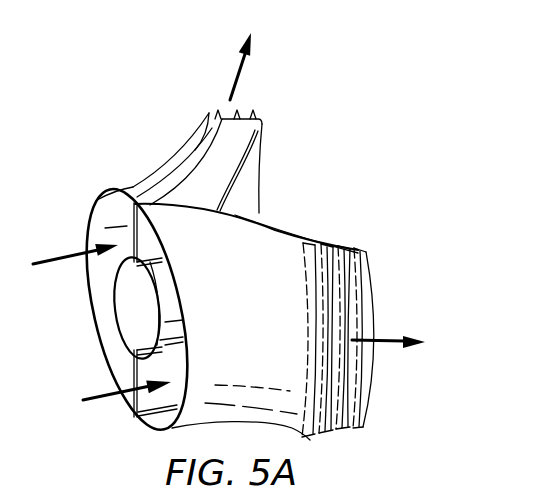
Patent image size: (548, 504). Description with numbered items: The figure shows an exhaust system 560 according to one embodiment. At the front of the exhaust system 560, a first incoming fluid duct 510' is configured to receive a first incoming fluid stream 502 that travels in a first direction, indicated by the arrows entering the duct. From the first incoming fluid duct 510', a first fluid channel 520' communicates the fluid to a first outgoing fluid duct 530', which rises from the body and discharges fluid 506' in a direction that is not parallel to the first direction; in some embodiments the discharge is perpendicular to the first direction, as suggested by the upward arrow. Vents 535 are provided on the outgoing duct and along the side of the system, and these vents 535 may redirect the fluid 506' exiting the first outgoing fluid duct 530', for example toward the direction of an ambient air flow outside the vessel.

The exhaust system 560 is at (124, 56).
The first incoming fluid stream 502 is at (60, 258).
The discharged fluid 506' is at (209, 66).
The first incoming fluid duct 510' is at (114, 309).
The first fluid channel 520' is at (179, 163).
The first outgoing fluid duct 530' is at (271, 104).
The vents 535 is at (186, 122).